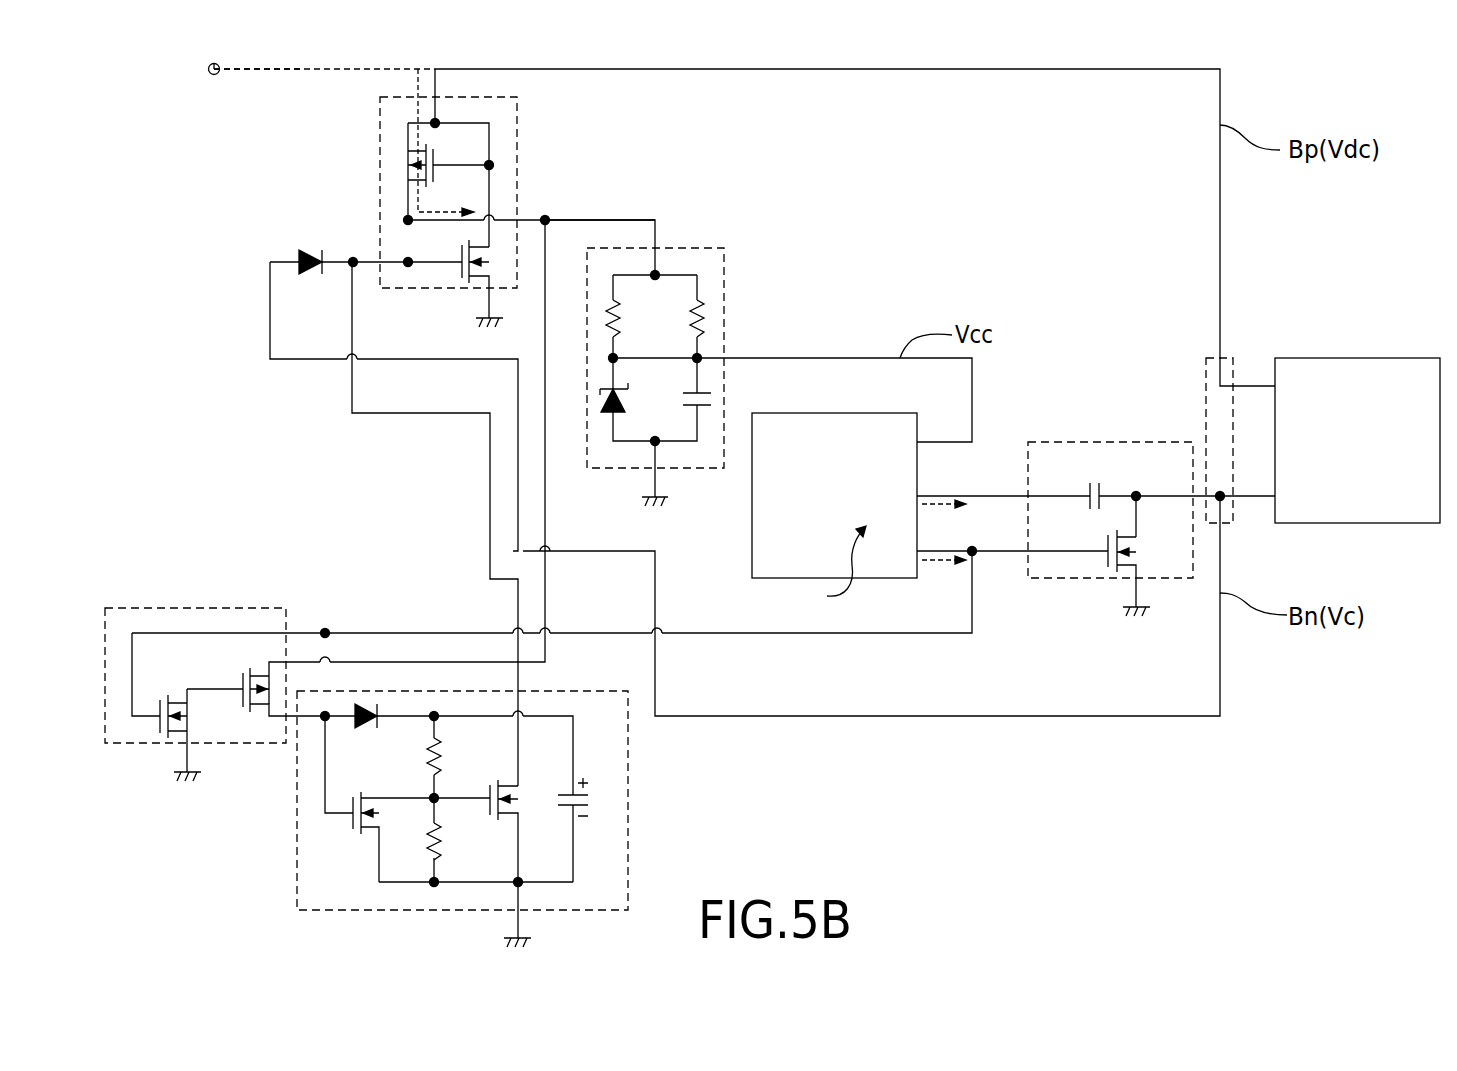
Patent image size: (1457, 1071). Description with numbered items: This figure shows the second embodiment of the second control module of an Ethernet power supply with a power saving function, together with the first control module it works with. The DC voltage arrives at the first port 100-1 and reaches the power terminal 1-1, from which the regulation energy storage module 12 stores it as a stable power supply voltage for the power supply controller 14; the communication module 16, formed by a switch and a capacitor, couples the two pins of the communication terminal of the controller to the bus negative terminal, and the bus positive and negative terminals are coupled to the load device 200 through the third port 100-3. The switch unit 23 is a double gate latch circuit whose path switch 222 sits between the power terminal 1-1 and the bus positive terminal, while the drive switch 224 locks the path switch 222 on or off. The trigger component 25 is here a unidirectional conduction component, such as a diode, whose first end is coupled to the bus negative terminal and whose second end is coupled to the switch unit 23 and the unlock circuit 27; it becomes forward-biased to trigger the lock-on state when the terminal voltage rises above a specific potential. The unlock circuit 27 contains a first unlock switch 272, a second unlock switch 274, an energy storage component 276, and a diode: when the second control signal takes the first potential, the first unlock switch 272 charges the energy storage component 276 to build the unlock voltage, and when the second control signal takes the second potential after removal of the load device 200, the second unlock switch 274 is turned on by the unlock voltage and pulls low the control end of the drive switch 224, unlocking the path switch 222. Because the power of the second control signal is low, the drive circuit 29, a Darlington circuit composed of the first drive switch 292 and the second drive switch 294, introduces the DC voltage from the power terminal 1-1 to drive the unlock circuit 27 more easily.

The first port 100-1 is at (214, 63).
The switch unit 23 is at (517, 150).
The path switch 222 is at (405, 173).
The drive switch 224 is at (467, 280).
The trigger component 25 is at (312, 248).
The power terminal 1-1 is at (600, 220).
The regulation energy storage module 12 is at (669, 252).
The power supply controller 14 is at (833, 420).
The communication module 16 is at (1110, 447).
The third port 100-3 is at (1230, 358).
The load device 200 is at (1358, 365).
The drive circuit 29 is at (195, 613).
The first drive switch 292 is at (153, 700).
The second drive switch 294 is at (247, 673).
The unlock circuit 27 is at (623, 852).
The first unlock switch 272 is at (357, 832).
The second unlock switch 274 is at (495, 817).
The energy storage component 276 is at (558, 797).